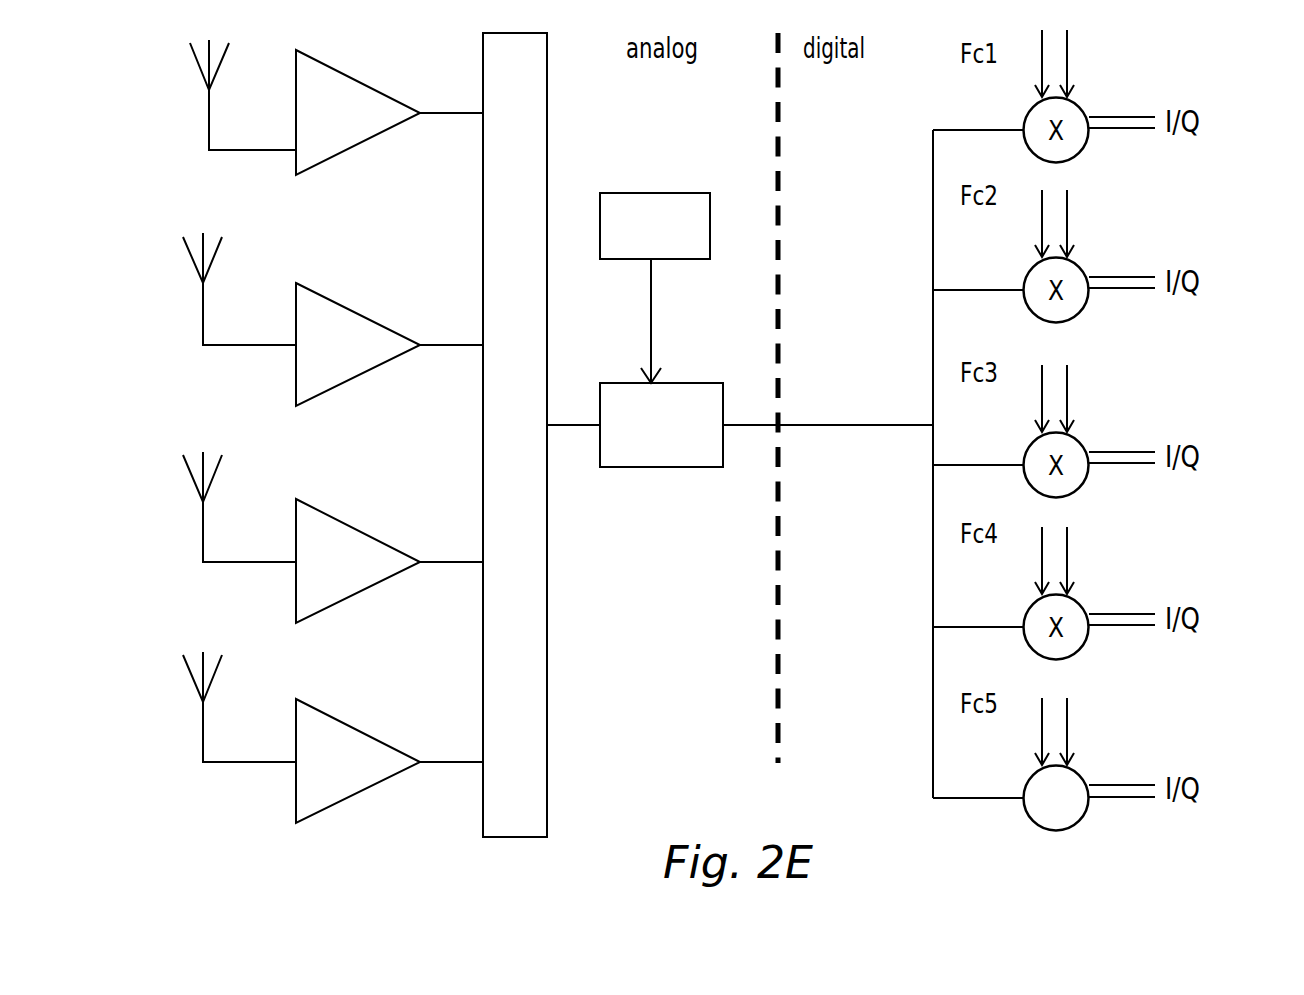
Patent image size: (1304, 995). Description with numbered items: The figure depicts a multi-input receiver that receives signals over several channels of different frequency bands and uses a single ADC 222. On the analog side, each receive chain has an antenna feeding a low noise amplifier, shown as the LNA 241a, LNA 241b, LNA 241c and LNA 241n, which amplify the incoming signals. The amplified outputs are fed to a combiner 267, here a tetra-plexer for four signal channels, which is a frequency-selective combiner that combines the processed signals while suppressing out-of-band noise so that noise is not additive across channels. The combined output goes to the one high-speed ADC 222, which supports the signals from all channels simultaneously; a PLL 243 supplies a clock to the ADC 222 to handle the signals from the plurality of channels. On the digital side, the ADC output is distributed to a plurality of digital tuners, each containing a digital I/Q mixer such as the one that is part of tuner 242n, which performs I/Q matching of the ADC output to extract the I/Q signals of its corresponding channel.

The LNA 241a is at (318, 129).
The LNA 241b is at (318, 341).
The LNA 241c is at (318, 558).
The LNA 241n is at (318, 751).
The combiner 267 is at (541, 435).
The PLL 243 is at (655, 288).
The ADC 222 is at (766, 425).
The digital tuner 242n is at (1118, 852).